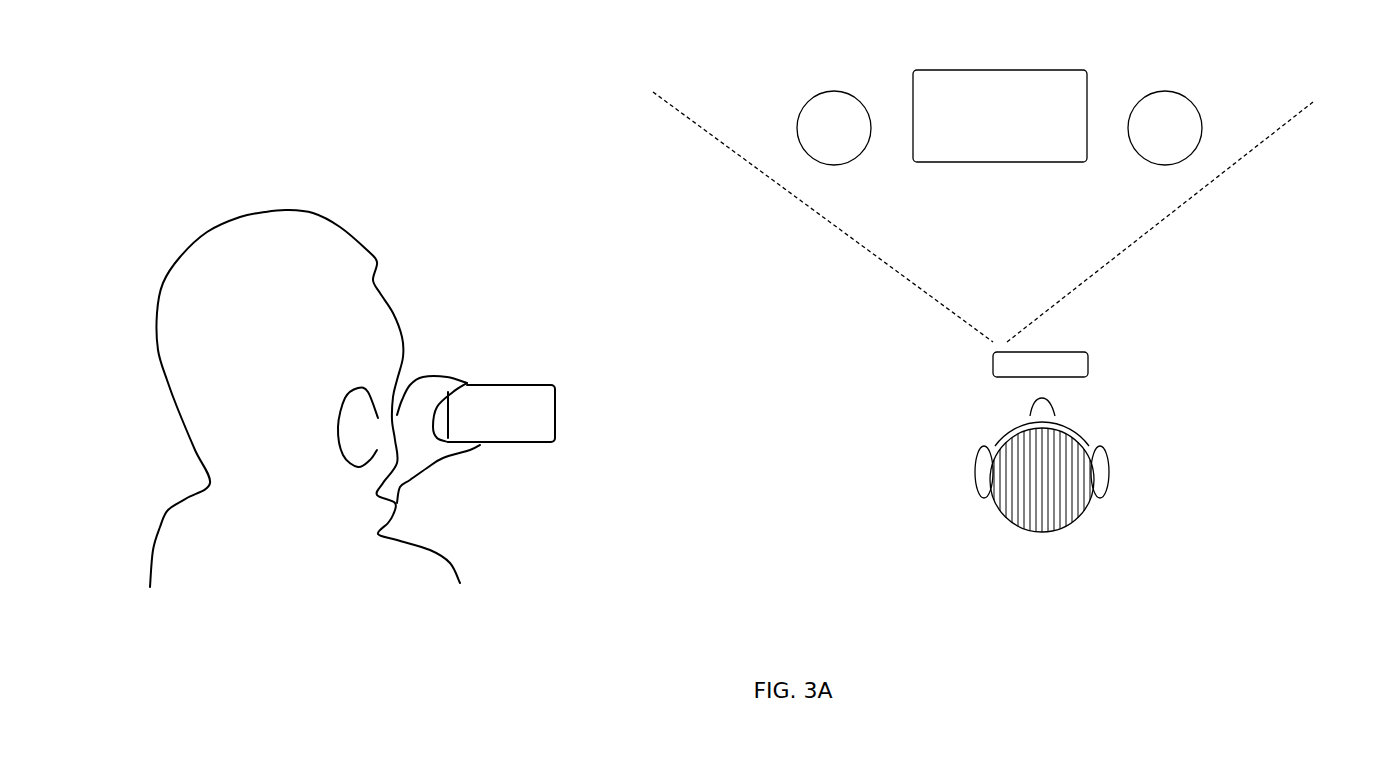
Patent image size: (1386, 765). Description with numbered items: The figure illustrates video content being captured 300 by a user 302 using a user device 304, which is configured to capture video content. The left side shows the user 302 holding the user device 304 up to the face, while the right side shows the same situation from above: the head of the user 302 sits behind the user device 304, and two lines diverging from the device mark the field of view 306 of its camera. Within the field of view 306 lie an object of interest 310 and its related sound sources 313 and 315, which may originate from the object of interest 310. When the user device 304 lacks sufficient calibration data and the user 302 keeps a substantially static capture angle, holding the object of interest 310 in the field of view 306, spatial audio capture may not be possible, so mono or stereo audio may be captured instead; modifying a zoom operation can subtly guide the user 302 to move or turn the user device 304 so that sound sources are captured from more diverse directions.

The video content capture 300 is at (117, 185).
The user 302 is at (1042, 486).
The user device 304 is at (1065, 364).
The field of view 306 is at (870, 257).
The object of interest 310 is at (1000, 116).
The sound source 313 is at (1165, 128).
The sound source 315 is at (834, 128).